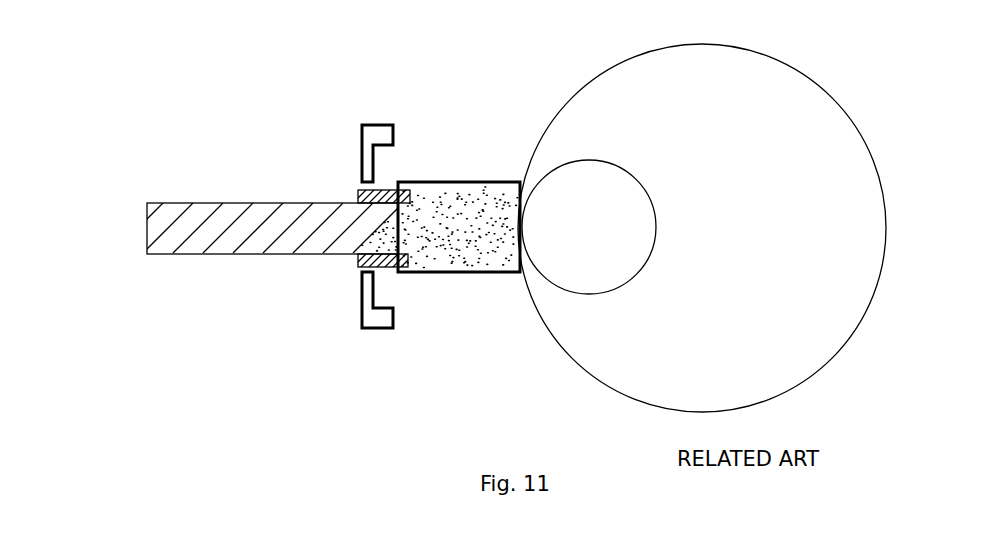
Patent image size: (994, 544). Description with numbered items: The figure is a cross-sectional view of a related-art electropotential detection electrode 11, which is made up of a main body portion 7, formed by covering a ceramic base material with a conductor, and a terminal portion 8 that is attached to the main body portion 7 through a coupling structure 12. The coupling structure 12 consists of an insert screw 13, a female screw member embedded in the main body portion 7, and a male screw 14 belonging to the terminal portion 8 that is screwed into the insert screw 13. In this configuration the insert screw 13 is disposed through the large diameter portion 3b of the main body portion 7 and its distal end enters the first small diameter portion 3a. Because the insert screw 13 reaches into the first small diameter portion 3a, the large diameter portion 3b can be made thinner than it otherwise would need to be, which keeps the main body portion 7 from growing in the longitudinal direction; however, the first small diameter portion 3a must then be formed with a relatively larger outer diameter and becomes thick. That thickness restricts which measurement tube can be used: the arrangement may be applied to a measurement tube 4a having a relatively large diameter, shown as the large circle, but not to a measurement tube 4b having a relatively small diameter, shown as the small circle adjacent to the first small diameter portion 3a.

The first small diameter portion 3a is at (468, 182).
The large diameter portion 3b is at (373, 125).
The measurement tube having a relatively large diameter 4a is at (825, 92).
The measurement tube having a relatively small diameter 4b is at (655, 218).
The main body portion 7 is at (358, 302).
The terminal portion 8 is at (181, 256).
The electropotential detection electrode 11 is at (272, 234).
The coupling structure 12 is at (357, 200).
The insert screw 13 is at (423, 272).
The male screw 14 is at (404, 237).